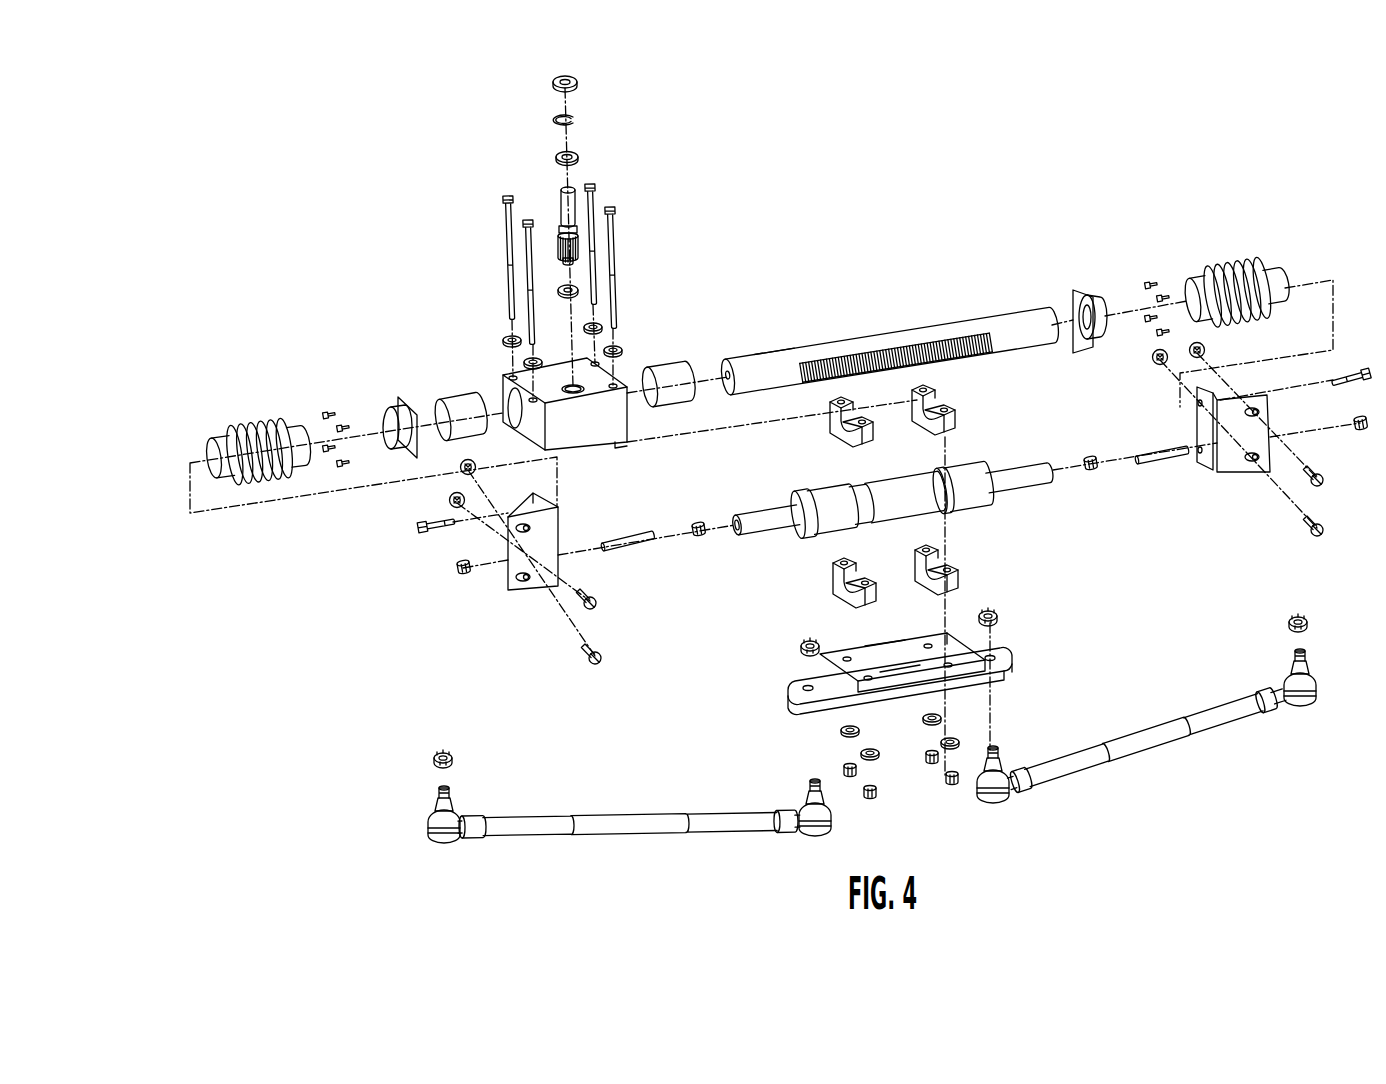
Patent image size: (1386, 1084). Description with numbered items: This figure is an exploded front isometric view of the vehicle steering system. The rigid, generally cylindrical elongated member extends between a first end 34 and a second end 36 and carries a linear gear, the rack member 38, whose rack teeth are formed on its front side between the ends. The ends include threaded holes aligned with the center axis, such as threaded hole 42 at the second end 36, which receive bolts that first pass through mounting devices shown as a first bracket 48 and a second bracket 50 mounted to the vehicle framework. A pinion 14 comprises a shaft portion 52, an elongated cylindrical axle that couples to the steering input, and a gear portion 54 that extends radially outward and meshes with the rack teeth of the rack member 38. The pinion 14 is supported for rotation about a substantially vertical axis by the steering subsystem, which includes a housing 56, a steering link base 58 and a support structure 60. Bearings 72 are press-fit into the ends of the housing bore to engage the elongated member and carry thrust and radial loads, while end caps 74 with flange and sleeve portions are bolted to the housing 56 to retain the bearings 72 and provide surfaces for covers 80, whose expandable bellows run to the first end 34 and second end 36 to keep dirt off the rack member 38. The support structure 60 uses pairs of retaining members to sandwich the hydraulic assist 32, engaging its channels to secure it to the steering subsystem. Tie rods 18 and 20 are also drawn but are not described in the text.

The pinion 14 is at (540, 190).
The first tie rod 18 is at (625, 832).
The second tie rod 20 is at (1160, 747).
The hydraulic assist 32 is at (975, 450).
The first end 34 is at (1032, 323).
The second end 36 is at (760, 360).
The rack member 38 is at (912, 342).
The threaded hole 42 is at (727, 374).
The first bracket 48 is at (1242, 472).
The second bracket 50 is at (520, 590).
The shaft portion 52 is at (576, 208).
The gear portion 54 is at (557, 246).
The housing 56 is at (590, 455).
The steering link base 58 is at (1023, 657).
The support structure 60 is at (975, 557).
The bearings 72 is at (460, 400).
The end caps 74 is at (393, 404).
The covers 80 is at (257, 422).